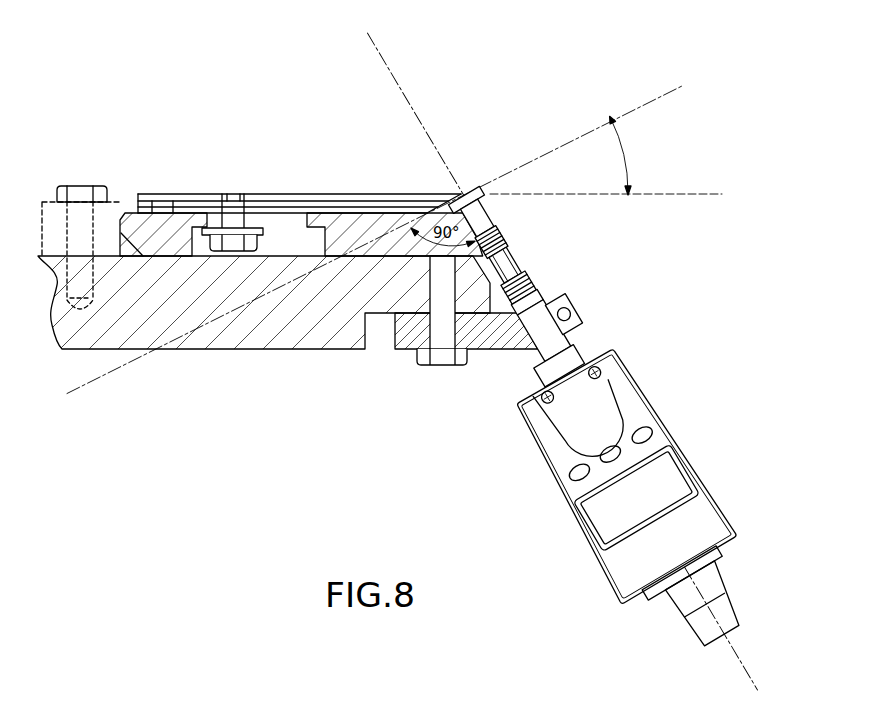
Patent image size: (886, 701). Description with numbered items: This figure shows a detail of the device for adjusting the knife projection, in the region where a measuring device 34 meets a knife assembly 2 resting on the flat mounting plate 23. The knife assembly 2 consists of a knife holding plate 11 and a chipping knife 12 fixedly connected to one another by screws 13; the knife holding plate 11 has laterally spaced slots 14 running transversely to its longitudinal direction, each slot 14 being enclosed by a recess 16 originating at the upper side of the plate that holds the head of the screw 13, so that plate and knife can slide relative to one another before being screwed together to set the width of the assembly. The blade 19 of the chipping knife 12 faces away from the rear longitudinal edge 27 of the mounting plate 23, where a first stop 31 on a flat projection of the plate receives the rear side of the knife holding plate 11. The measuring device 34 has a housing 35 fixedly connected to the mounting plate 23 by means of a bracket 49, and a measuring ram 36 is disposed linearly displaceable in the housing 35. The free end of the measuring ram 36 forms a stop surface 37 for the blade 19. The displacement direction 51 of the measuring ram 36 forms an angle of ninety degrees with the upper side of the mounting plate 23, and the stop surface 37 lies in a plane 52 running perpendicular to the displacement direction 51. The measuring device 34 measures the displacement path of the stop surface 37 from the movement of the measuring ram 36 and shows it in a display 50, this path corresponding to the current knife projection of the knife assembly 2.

The knife assembly 2 is at (299, 178).
The knife holding plate 11 is at (175, 242).
The chipping knife 12 is at (270, 195).
The screw 13 is at (234, 202).
The slot 14 is at (298, 222).
The recess 16 is at (324, 242).
The blade 19 is at (461, 194).
The mounting plate 23 is at (217, 328).
The rear longitudinal edge 27 is at (533, 286).
The first stop 31 is at (112, 204).
The measuring device 34 is at (679, 483).
The housing 35 is at (581, 320).
The measuring ram 36 is at (484, 207).
The stop surface 37 is at (471, 190).
The bracket 49 is at (497, 349).
The display 50 is at (675, 487).
The displacement direction 51 is at (377, 48).
The plane 52 is at (641, 104).